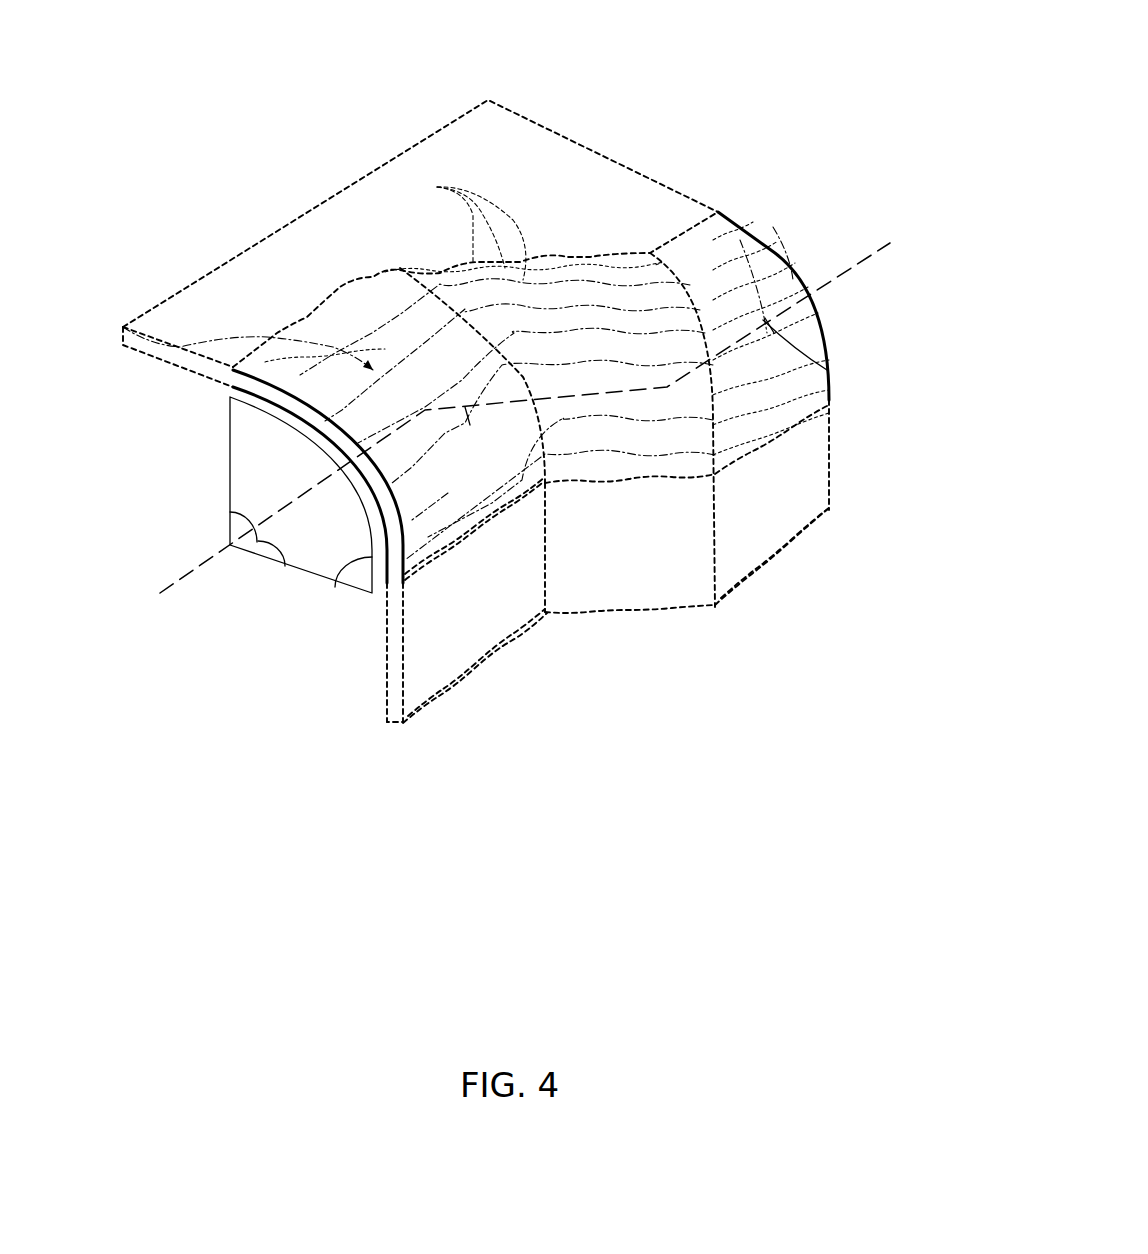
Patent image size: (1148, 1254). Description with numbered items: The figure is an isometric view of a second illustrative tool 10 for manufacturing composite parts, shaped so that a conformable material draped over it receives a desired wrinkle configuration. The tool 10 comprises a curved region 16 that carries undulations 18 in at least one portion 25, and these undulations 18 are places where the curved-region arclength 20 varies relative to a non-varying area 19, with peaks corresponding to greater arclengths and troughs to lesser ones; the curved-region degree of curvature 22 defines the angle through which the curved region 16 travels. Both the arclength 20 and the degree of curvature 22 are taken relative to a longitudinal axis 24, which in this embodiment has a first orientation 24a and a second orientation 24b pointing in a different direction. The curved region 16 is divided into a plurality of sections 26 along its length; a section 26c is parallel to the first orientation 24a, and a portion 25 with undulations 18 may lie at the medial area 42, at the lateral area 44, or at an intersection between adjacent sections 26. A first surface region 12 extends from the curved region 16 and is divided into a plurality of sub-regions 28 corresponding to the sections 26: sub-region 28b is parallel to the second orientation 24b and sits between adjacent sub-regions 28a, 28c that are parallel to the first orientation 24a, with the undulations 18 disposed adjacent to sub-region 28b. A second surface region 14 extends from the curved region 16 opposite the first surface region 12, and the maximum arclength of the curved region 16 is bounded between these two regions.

The tool 10 is at (820, 58).
The first surface region 12 is at (828, 483).
The second surface region 14 is at (603, 157).
The curved region 16 is at (797, 267).
The undulations 18 is at (468, 229).
The non-varying area 19 is at (135, 355).
The curved-region arclength 20 is at (343, 573).
The curved-region degree of curvature 22 is at (283, 560).
The longitudinal axis 24 is at (165, 489).
The first orientation 24a is at (828, 370).
The second orientation 24b is at (472, 433).
The portion 25 is at (860, 307).
The plurality of sections 26 is at (860, 407).
The section 26c is at (468, 533).
The plurality of sub-regions 28 is at (800, 698).
The sub-region 28a is at (500, 662).
The sub-region 28b is at (648, 615).
The sub-region 28c is at (783, 558).
The medial area 42 is at (618, 297).
The lateral area 44 is at (763, 233).